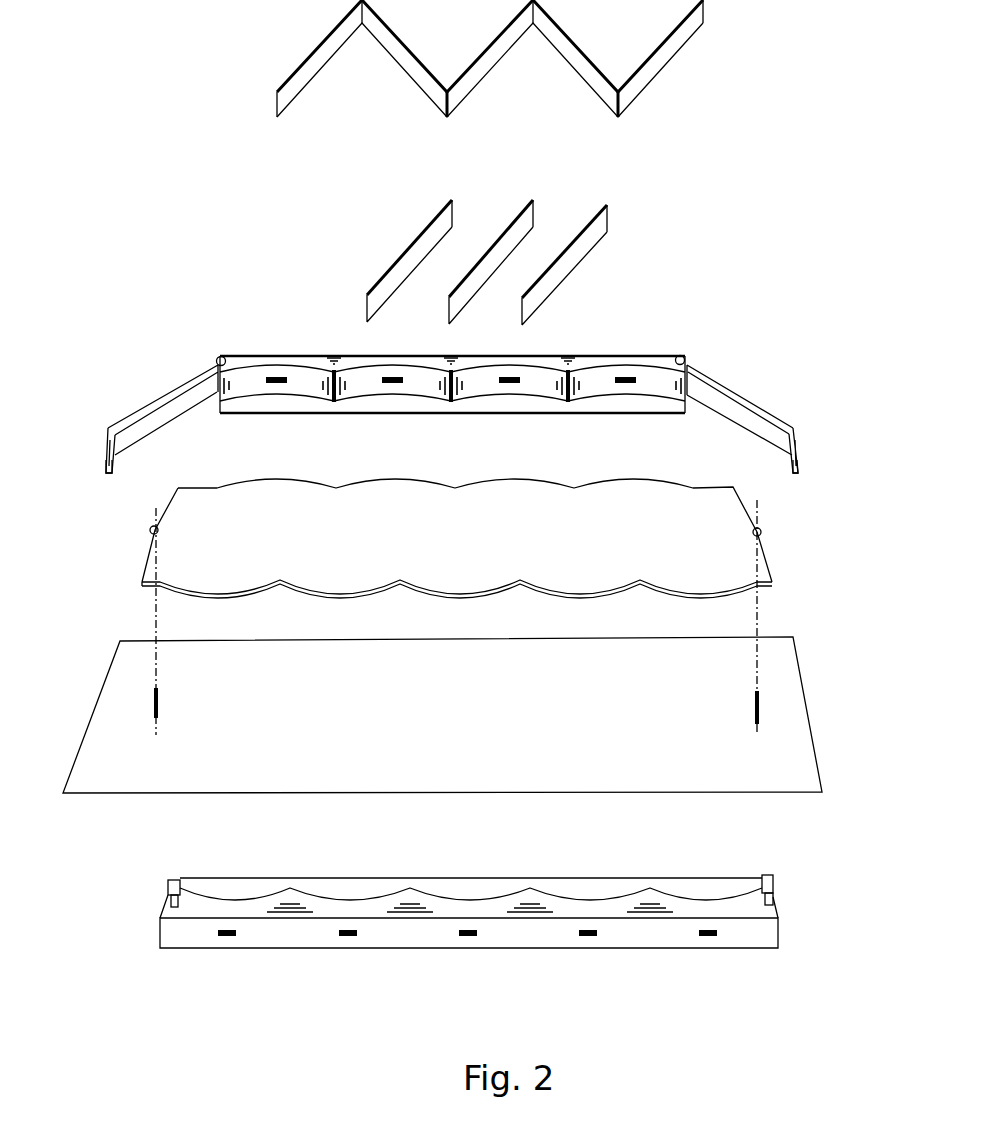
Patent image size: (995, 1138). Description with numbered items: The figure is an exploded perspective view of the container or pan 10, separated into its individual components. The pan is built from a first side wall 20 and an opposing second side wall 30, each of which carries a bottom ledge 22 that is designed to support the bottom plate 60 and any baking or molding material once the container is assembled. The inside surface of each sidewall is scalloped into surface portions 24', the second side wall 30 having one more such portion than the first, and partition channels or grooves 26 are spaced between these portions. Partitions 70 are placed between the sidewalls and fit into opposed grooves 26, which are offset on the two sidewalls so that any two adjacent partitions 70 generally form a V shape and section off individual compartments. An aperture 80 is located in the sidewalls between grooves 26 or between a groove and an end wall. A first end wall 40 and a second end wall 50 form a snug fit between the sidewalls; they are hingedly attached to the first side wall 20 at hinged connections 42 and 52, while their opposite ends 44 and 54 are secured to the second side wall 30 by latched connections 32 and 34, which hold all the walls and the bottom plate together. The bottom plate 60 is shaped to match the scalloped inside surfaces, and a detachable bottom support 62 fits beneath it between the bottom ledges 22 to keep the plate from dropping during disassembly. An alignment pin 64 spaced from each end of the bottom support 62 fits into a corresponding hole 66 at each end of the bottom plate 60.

The container or pan 10 is at (147, 44).
The first side wall 20 is at (451, 381).
The bottom ledge 22 is at (692, 888).
The surface portion 24' is at (452, 412).
The partition channels or grooves 26 is at (557, 402).
The second side wall 30 is at (467, 694).
The latch mechanism or latched connection 32 is at (775, 882).
The latch mechanism or latched connection 34 is at (168, 888).
The first end wall 40 is at (740, 393).
The hinged connection 42 is at (684, 357).
The opposite end 44 is at (797, 453).
The second end wall 50 is at (156, 405).
The hinged connection 52 is at (217, 358).
The opposite end 54 is at (103, 455).
The bottom plate 60 is at (475, 538).
The bottom support 62 is at (442, 646).
The alignment pin 64 is at (753, 710).
The hole 66 is at (762, 531).
The partitions 70 is at (586, 222).
The hole or aperture 80 is at (340, 937).